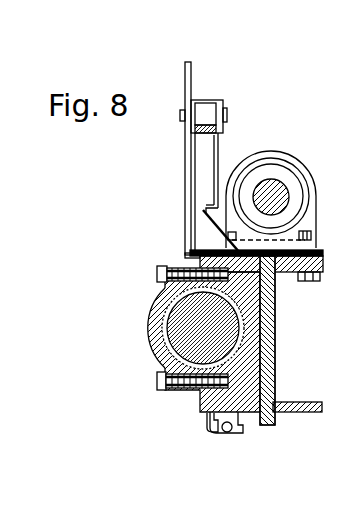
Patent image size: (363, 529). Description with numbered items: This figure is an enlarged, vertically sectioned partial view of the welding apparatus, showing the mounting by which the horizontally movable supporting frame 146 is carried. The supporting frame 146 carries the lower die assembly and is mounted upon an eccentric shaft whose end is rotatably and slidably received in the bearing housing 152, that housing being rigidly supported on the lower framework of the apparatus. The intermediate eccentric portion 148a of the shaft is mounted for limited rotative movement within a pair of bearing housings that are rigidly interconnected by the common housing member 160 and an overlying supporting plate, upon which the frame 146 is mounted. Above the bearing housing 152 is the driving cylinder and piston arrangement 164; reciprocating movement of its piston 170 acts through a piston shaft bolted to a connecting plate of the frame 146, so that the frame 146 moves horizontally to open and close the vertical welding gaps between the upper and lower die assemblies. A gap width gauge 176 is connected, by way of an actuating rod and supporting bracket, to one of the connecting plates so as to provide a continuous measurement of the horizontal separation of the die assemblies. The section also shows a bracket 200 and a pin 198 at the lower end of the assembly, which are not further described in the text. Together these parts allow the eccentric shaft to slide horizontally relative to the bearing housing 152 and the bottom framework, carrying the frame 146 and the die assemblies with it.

The gap width gauge 176 is at (185, 64).
The driving cylinder and piston arrangement 164 is at (185, 206).
The piston 170 is at (256, 178).
The common housing member 160 is at (292, 295).
The supporting frame 146 is at (276, 352).
The bearing housing 152 is at (151, 303).
The eccentric portion of the shaft 148a is at (163, 333).
The bracket 200 is at (210, 425).
The pin 198 is at (224, 433).